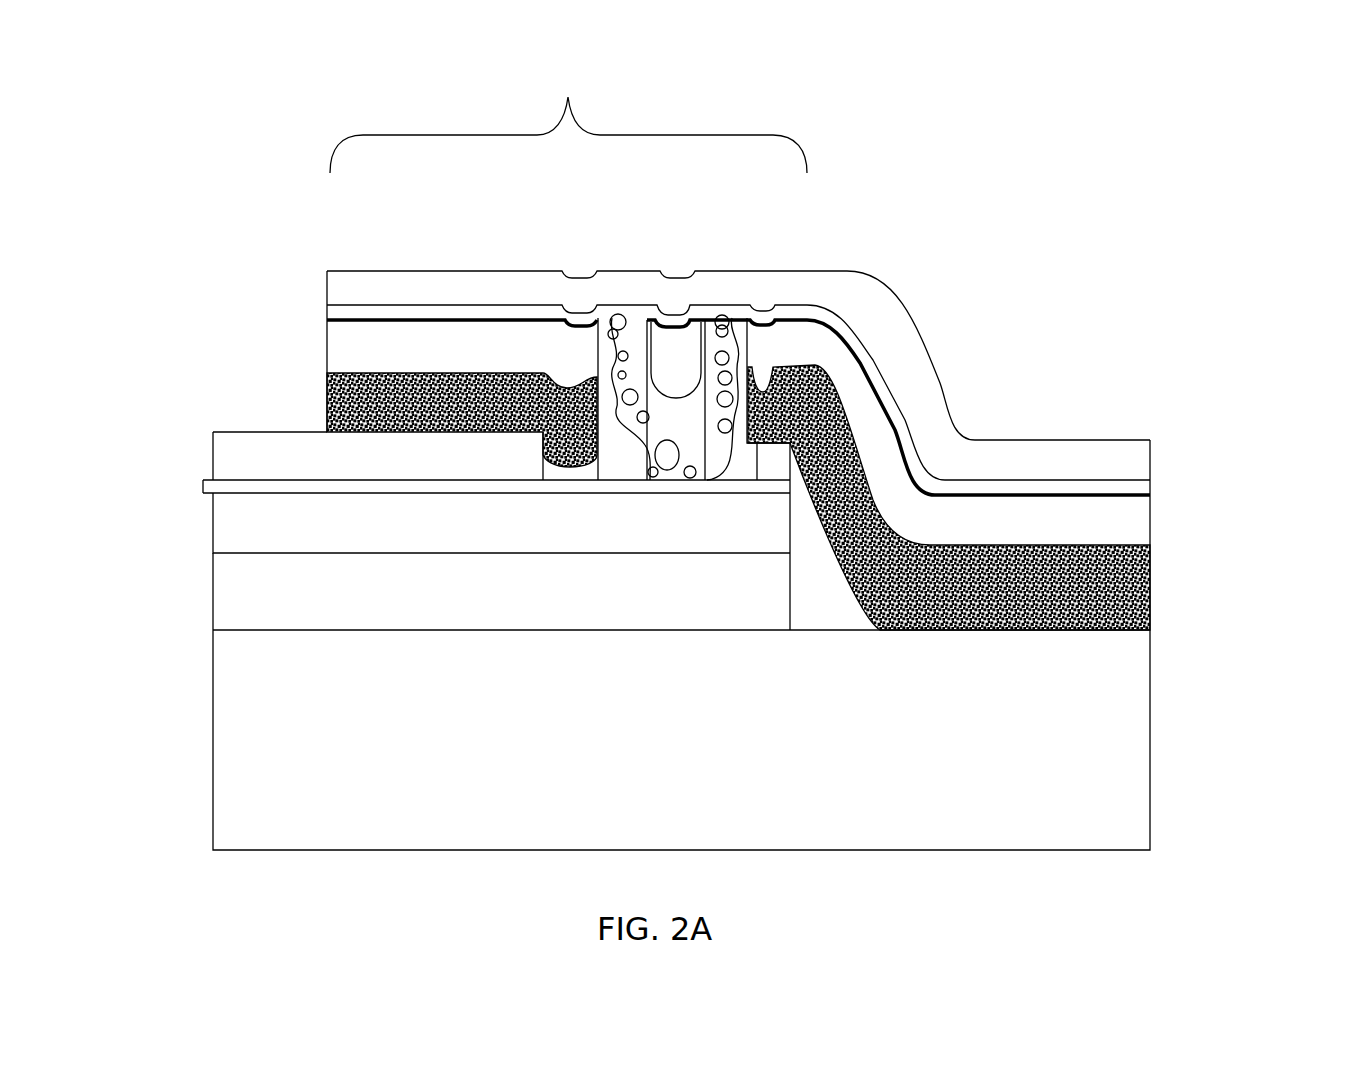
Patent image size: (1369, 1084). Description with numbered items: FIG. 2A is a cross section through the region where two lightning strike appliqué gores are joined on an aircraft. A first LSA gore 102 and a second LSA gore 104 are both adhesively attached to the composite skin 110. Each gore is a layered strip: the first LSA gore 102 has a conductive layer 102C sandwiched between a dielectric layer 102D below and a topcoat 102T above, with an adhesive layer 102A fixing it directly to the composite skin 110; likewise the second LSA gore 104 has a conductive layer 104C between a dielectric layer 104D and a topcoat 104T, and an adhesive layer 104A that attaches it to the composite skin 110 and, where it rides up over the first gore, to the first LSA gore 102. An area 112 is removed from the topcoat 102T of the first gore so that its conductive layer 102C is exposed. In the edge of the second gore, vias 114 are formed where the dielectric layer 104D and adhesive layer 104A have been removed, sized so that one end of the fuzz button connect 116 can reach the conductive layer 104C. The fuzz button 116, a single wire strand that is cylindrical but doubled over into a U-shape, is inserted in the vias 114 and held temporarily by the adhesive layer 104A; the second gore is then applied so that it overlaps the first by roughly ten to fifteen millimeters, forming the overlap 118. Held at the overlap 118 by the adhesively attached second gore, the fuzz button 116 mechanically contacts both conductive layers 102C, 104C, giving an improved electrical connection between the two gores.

The first LSA gore 102 is at (293, 432).
The topcoat 102T is at (233, 432).
The conductive layer 102C is at (200, 486).
The dielectric layer 102D is at (213, 521).
The adhesive layer 102A is at (213, 593).
The second LSA gore 104 is at (912, 345).
The topcoat 104T is at (1143, 461).
The conductive layer 104C is at (1143, 490).
The dielectric layer 104D is at (1143, 523).
The adhesive layer 104A is at (1143, 601).
The composite skin 110 is at (213, 740).
The area 112 is at (638, 472).
The vias 114 is at (708, 340).
The fuzz button connect 116 is at (724, 318).
The overlap 118 is at (568, 110).